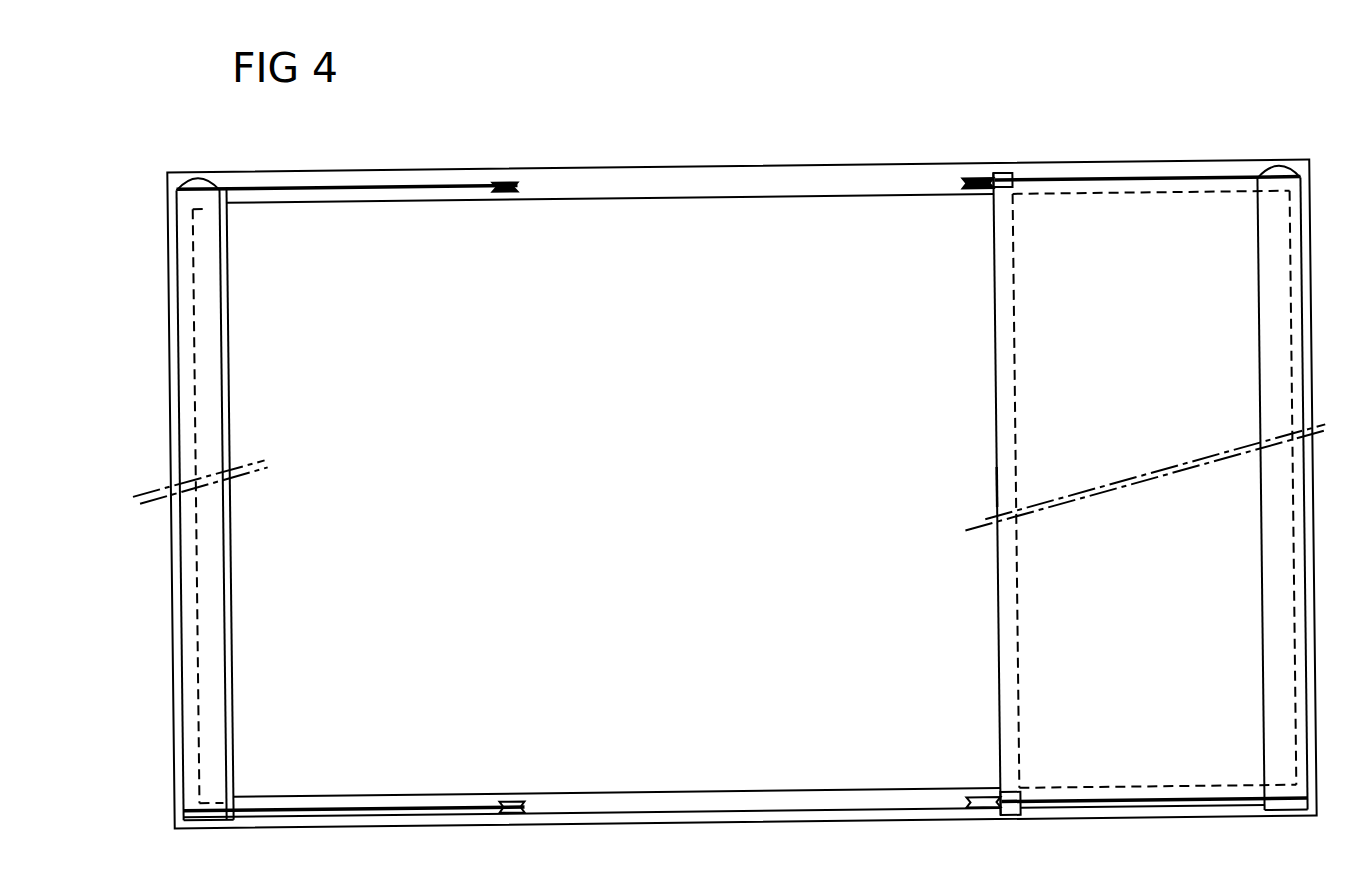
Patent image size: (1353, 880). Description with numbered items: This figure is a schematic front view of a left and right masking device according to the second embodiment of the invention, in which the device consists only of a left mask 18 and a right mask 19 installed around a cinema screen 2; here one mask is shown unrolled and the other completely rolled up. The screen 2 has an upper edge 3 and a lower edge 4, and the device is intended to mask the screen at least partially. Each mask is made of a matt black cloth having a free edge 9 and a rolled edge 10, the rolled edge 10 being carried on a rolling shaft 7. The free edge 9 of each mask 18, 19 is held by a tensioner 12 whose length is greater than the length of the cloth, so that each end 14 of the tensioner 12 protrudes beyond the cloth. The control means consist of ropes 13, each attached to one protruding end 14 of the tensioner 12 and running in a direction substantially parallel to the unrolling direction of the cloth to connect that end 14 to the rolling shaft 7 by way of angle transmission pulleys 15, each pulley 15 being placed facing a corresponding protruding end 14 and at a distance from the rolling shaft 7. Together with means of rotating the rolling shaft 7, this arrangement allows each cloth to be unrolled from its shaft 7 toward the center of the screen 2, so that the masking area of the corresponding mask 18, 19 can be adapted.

The cinema screen 2 is at (591, 526).
The upper edge 3 is at (692, 197).
The lower edge 4 is at (729, 797).
The rolling shaft 7 is at (1284, 171).
The free edge 9 is at (997, 490).
The rolled edge 10 is at (1304, 386).
The tensioner 12 is at (1006, 433).
The ropes 13 is at (401, 184).
The end of the tensioner 14 is at (1012, 175).
The angle transmission pulleys 15 is at (508, 197).
The left mask 18 is at (210, 339).
The right mask 19 is at (1150, 425).